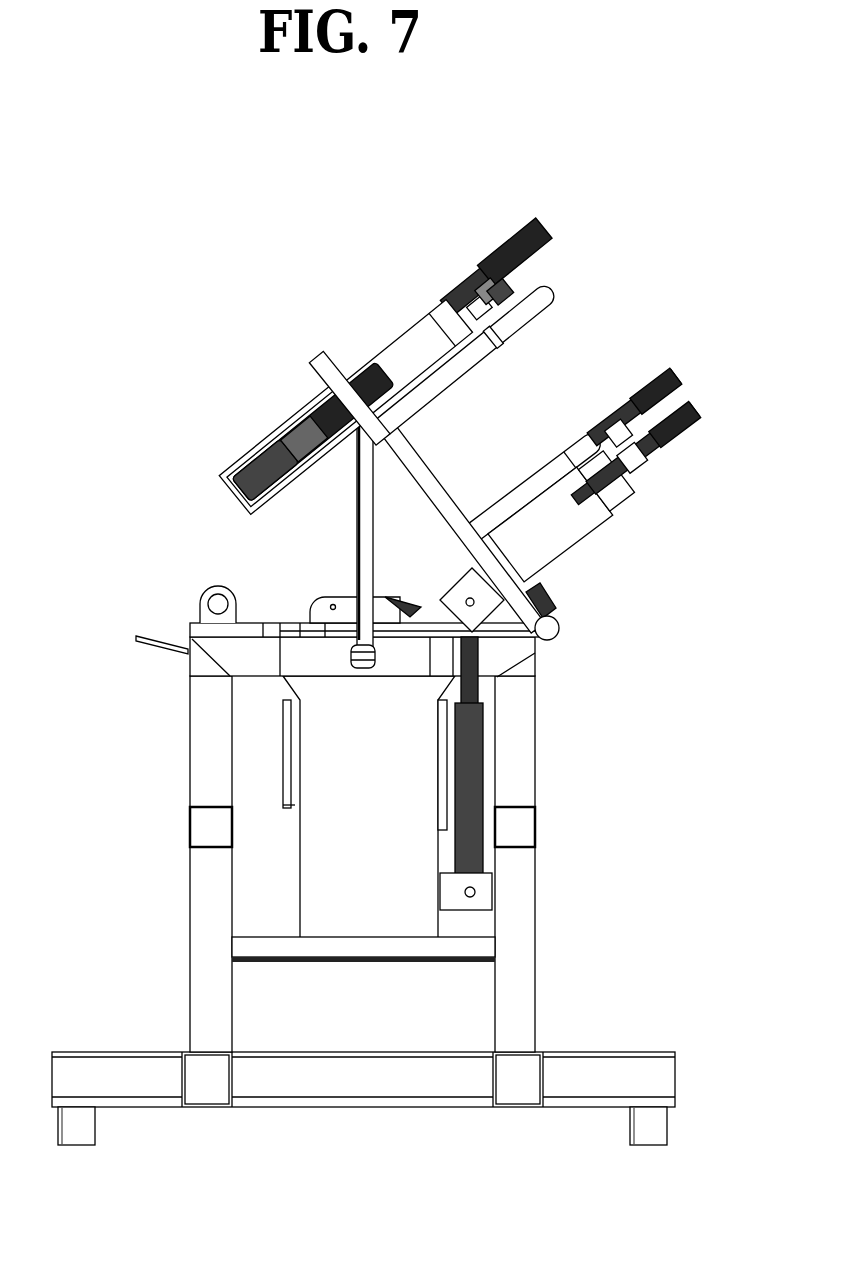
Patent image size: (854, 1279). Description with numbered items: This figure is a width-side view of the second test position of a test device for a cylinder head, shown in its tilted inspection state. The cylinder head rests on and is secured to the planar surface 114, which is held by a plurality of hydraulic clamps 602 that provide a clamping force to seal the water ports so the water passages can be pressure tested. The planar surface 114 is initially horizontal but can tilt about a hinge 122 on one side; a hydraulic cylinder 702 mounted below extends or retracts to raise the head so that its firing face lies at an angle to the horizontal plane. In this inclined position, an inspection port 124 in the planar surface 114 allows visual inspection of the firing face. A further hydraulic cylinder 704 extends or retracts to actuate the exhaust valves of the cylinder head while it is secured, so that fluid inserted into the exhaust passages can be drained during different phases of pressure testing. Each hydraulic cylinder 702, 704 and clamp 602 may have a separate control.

The hydraulic clamps 602 is at (697, 398).
The planar surface 114 is at (323, 353).
The hydraulic cylinder 704 is at (267, 443).
The inspection port 124 is at (430, 477).
The hinge 122 is at (560, 618).
The hydraulic cylinder 702 is at (477, 768).